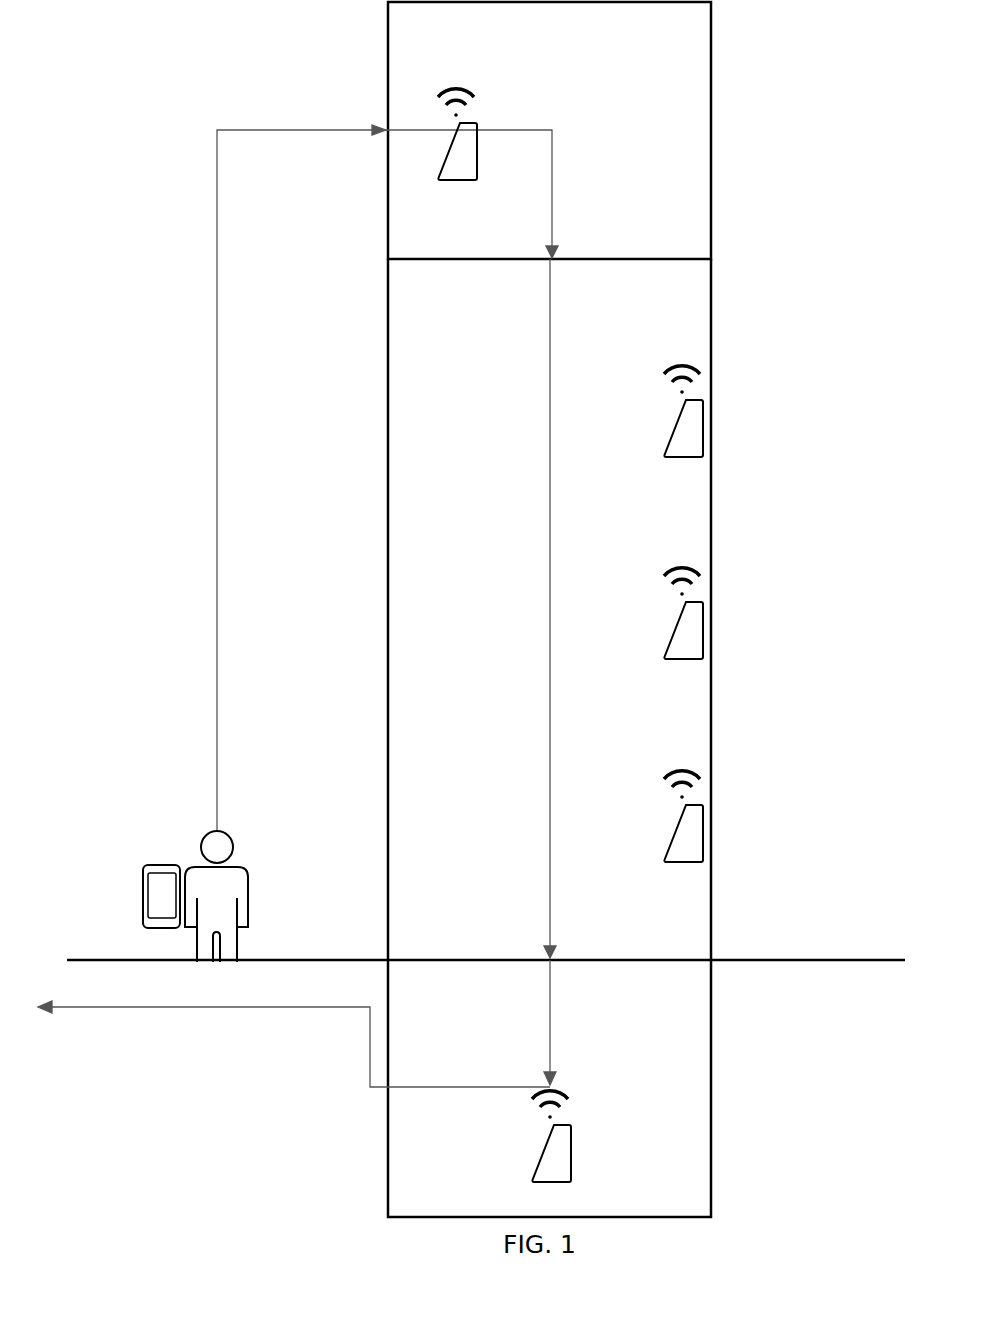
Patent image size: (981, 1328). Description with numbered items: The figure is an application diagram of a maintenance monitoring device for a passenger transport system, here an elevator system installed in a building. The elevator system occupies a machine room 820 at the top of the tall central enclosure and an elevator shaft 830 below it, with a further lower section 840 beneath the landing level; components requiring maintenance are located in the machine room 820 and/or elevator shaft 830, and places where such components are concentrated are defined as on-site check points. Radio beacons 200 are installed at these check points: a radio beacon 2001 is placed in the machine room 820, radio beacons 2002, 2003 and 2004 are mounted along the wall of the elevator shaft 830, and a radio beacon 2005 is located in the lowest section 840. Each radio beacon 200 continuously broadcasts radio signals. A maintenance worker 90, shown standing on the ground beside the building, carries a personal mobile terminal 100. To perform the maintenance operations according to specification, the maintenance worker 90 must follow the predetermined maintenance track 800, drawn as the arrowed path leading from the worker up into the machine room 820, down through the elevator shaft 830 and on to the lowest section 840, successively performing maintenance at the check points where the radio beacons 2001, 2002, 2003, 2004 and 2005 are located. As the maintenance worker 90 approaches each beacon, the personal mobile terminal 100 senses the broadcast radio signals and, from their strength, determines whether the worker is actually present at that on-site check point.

The maintenance worker 90 is at (250, 868).
The personal mobile terminal 100 is at (165, 865).
The radio beacon 200 is at (631, 635).
The radio beacon 2001 is at (455, 185).
The radio beacon 2002 is at (695, 432).
The radio beacon 2003 is at (695, 630).
The radio beacon 2004 is at (695, 842).
The radio beacon 2005 is at (560, 1155).
The predetermined maintenance track 800 is at (282, 132).
The machine room 820 is at (678, 110).
The elevator shaft 830 is at (429, 477).
The lower elevator shaft section 840 is at (429, 1177).